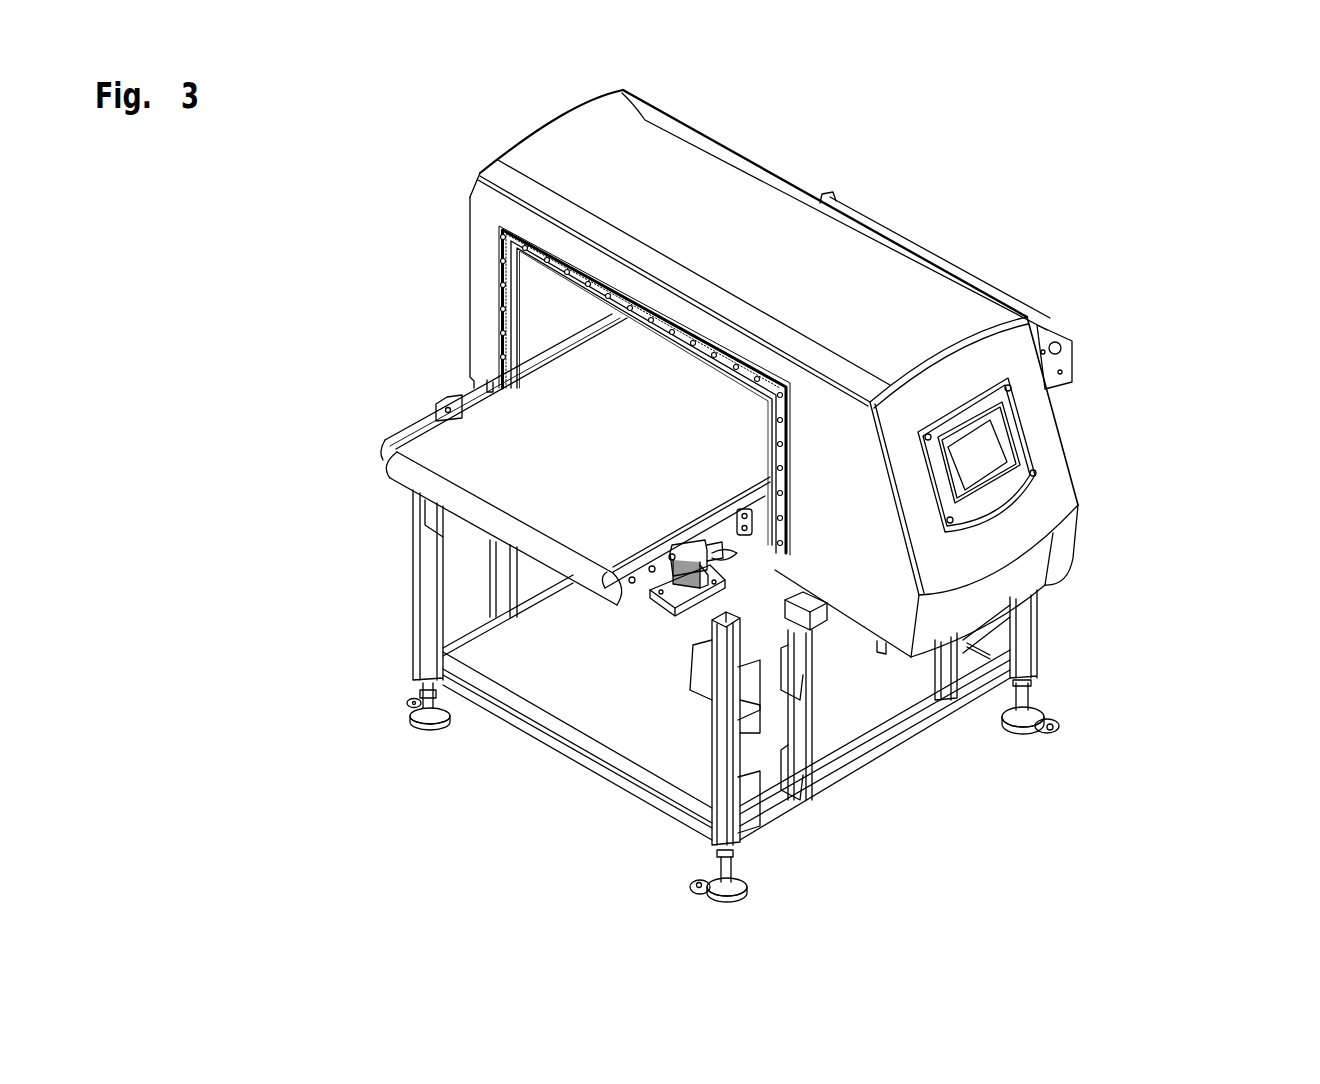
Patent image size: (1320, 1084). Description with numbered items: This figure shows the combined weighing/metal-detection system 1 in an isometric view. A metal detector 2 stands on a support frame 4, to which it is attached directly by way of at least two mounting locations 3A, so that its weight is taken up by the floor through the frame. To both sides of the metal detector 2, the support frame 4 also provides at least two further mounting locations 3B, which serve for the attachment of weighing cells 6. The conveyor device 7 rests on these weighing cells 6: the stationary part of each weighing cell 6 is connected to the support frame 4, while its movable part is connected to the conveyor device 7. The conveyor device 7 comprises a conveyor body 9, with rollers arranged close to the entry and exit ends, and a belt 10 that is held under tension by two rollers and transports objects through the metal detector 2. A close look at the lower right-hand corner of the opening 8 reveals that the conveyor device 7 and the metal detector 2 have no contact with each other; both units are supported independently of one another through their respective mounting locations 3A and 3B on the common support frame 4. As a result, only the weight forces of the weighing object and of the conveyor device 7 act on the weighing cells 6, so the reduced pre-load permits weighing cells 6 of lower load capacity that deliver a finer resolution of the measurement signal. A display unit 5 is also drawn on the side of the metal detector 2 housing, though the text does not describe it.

The combined weighing/metal-detection system 1 is at (1177, 167).
The metal detector 2 is at (1083, 586).
The mounting locations 3A is at (812, 602).
The mounting locations 3B is at (675, 592).
The support frame 4 is at (520, 733).
The display unit 5 is at (1025, 428).
The weighing cells 6 is at (712, 575).
The conveyor device 7 is at (382, 402).
The opening 8 is at (554, 312).
The conveyor body 9 is at (722, 527).
The belt 10 is at (445, 492).